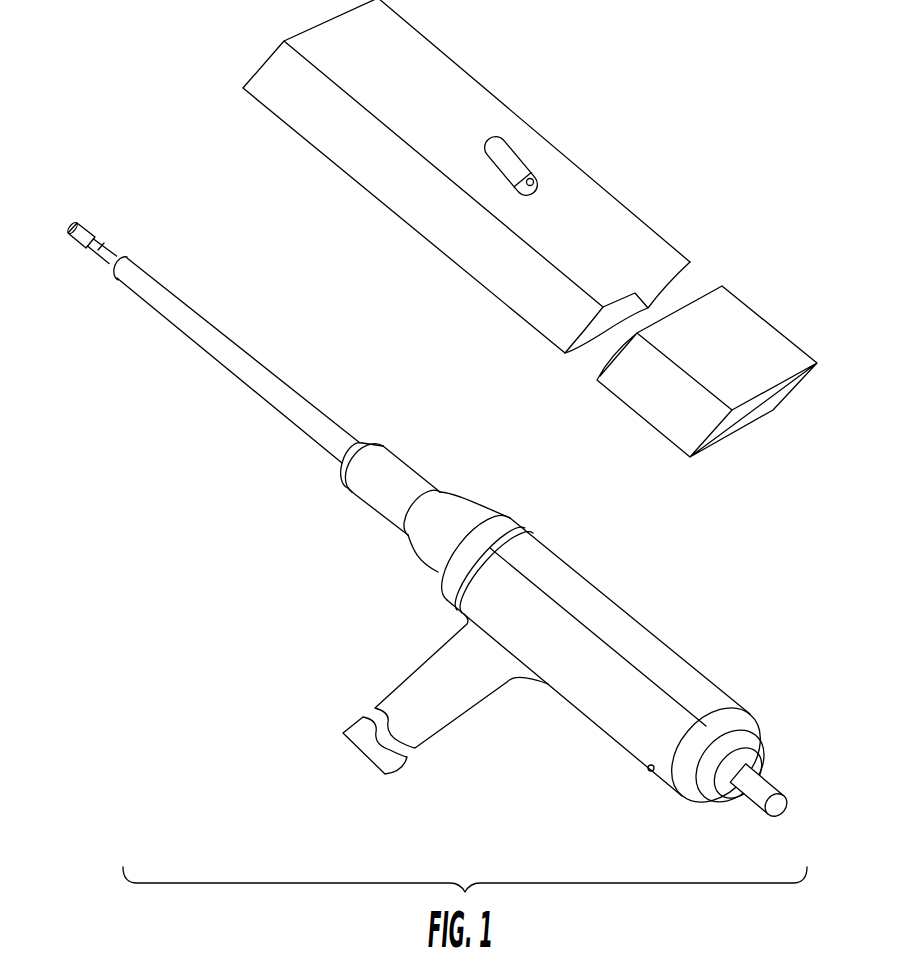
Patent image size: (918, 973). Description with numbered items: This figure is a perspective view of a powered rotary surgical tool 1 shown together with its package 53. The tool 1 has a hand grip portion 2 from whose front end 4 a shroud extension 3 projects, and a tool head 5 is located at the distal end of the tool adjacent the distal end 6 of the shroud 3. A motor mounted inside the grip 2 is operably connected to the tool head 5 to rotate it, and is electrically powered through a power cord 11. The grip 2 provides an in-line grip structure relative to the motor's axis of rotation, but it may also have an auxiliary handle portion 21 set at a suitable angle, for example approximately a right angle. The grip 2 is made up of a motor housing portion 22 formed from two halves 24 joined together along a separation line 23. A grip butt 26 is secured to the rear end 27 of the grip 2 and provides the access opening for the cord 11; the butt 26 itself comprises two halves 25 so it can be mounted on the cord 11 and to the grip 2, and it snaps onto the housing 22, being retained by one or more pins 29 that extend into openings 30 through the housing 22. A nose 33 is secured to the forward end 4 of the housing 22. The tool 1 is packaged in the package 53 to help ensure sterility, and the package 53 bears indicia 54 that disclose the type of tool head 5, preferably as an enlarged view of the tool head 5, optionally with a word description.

The rotary surgical tool 1 is at (524, 458).
The hand grip portion 2 is at (700, 673).
The shroud extension 3 is at (230, 335).
The front end 4 is at (405, 462).
The tool head 5 is at (87, 222).
The distal end 6 is at (135, 255).
The power cord 11 is at (747, 807).
The auxiliary handle portion 21 is at (400, 687).
The motor housing portion 22 is at (647, 643).
The separation line 23 is at (597, 630).
The halves 24 is at (572, 578).
The halves 25 is at (757, 733).
The grip butt 26 is at (755, 727).
The rear end 27 is at (743, 707).
The pins 29 is at (648, 770).
The openings 30 is at (645, 765).
The nose 33 is at (492, 508).
The package 53 is at (573, 163).
The indicia 54 is at (460, 97).